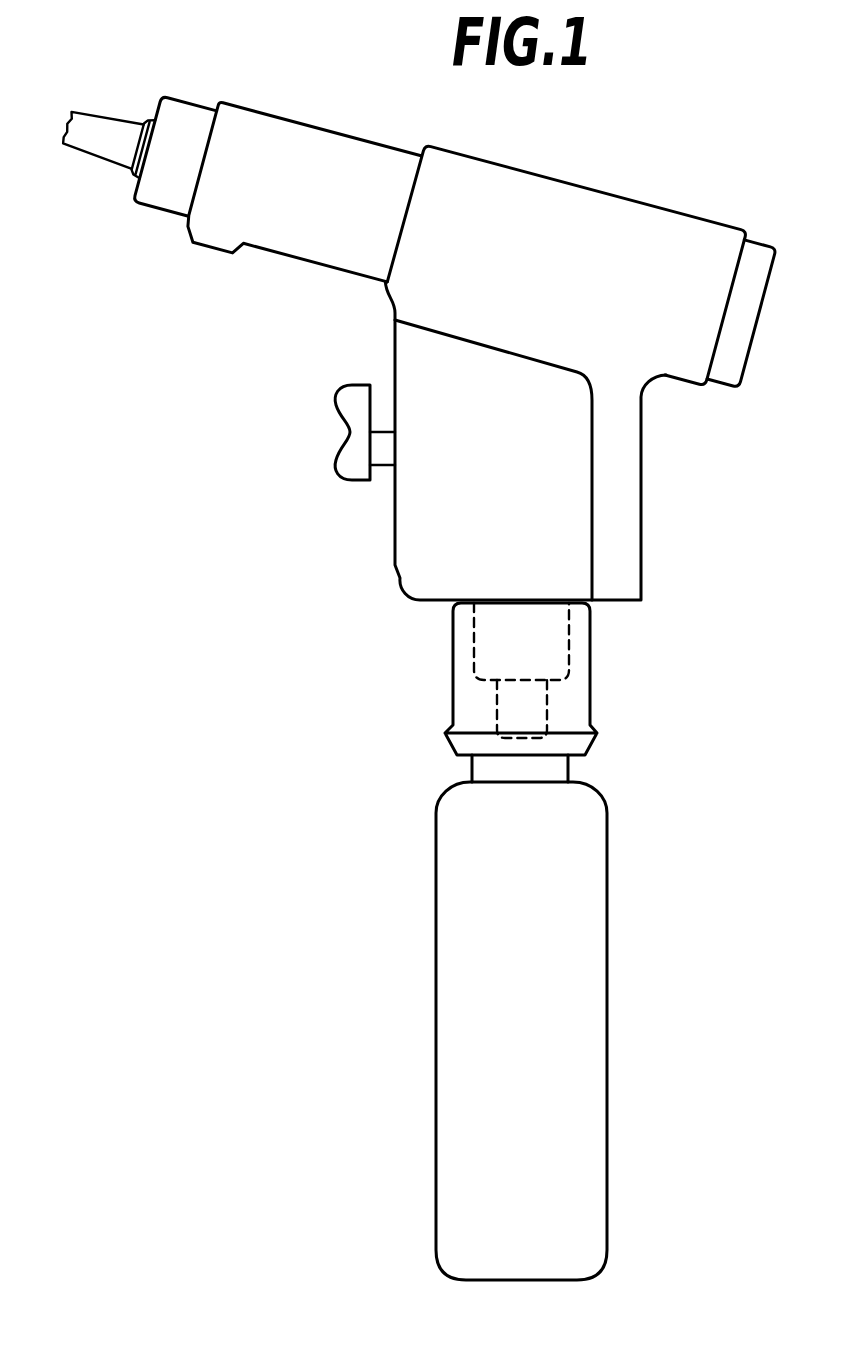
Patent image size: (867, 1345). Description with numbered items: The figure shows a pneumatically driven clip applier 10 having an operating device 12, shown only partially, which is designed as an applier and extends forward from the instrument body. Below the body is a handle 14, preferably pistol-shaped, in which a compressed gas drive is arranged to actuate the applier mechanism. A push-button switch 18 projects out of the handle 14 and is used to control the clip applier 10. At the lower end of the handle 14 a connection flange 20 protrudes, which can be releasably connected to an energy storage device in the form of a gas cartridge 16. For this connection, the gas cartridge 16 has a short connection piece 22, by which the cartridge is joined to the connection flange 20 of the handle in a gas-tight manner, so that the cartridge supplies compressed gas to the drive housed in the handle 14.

The clip applier 10 is at (676, 158).
The operating device 12 is at (295, 88).
The handle 14 is at (688, 465).
The gas cartridge 16 is at (653, 1025).
The push-button switch 18 is at (352, 442).
The connection flange 20 is at (472, 640).
The connection piece 22 is at (572, 708).